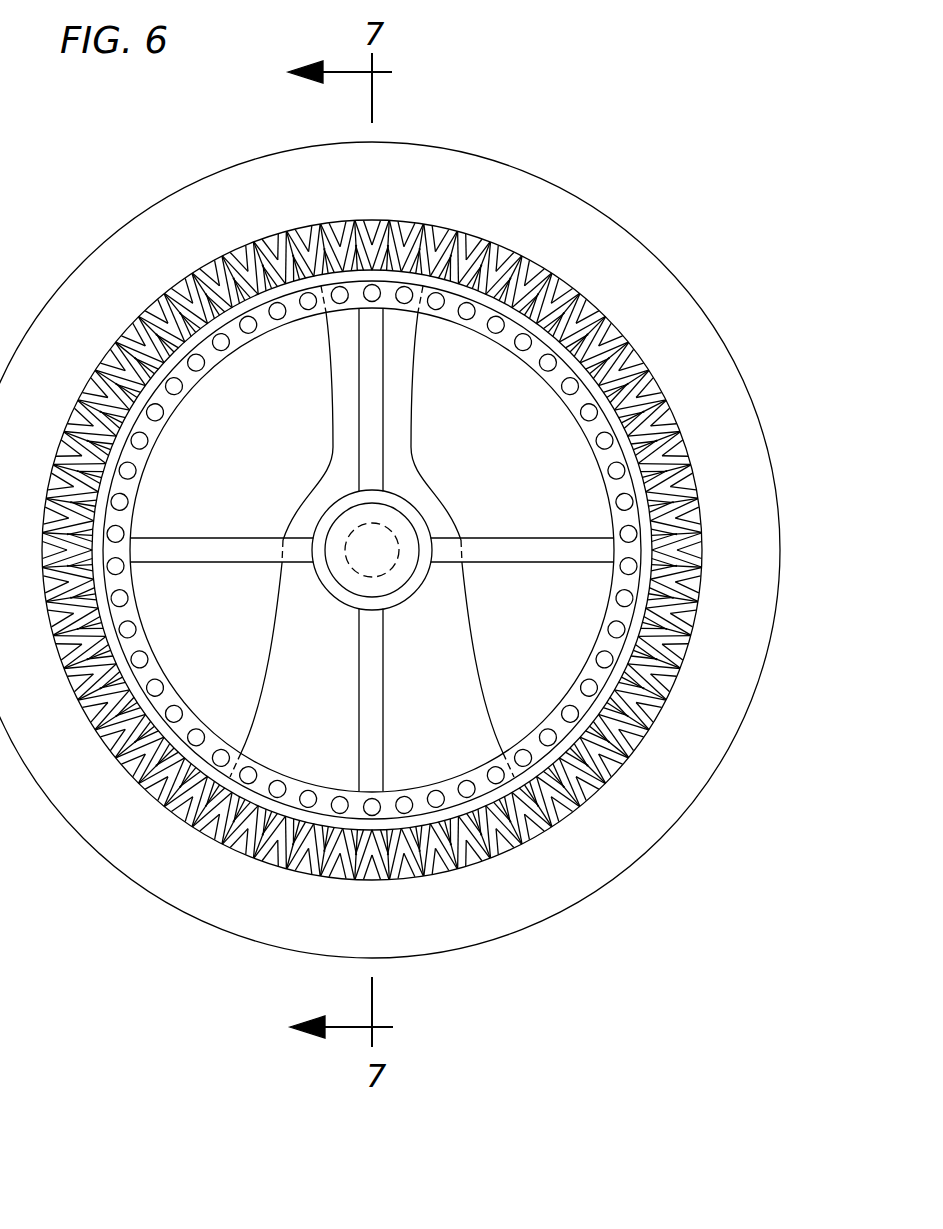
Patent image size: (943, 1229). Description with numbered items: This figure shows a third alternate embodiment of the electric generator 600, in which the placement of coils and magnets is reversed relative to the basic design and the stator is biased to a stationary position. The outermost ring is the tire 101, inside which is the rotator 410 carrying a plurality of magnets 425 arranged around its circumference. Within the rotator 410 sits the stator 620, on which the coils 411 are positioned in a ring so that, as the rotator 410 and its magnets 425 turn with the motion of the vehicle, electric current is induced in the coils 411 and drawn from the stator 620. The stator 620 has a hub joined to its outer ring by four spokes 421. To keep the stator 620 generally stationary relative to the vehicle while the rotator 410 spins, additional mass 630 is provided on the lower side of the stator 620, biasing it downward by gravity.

The alternate embodiment electric generator 600 is at (167, 185).
The tire 101 is at (512, 175).
The rotator 410 is at (700, 512).
The magnets 425 is at (590, 295).
The stator 620 is at (532, 370).
The coils 411 is at (612, 502).
The spokes 421 is at (355, 348).
The additional mass 630 is at (282, 652).